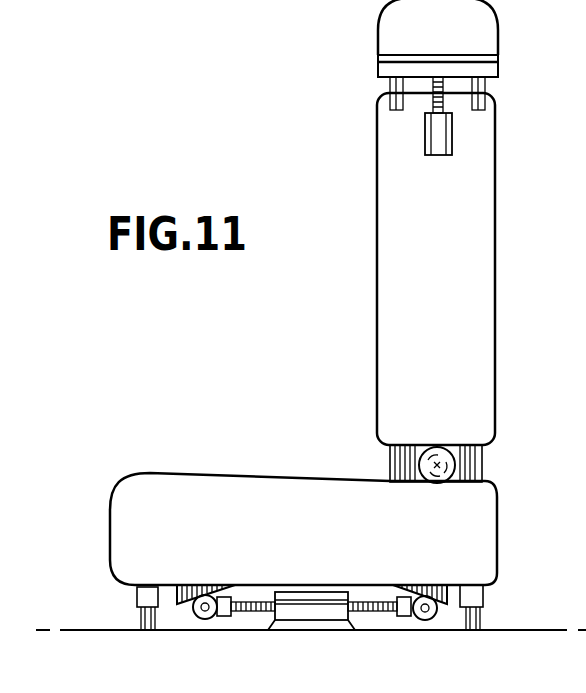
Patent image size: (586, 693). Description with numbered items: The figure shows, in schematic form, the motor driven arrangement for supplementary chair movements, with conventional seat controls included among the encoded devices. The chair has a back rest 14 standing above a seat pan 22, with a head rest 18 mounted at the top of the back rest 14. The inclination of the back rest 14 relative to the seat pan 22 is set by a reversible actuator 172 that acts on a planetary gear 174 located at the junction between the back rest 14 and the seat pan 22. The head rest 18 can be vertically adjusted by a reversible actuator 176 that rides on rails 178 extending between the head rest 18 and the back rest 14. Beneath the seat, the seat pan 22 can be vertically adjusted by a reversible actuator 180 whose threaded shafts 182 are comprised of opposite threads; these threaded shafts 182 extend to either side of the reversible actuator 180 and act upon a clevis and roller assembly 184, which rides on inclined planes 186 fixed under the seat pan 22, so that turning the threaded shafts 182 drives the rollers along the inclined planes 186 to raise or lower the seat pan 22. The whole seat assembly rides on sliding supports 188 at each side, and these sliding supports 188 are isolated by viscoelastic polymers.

The back rest 14 is at (399, 247).
The head rest 18 is at (470, 30).
The seat pan 22 is at (147, 500).
The reversible actuator 172 is at (456, 462).
The planetary gear 174 is at (418, 463).
The reversible actuator 176 is at (445, 147).
The rails 178 is at (487, 93).
The reversible actuator 180 is at (315, 613).
The threaded shafts 182 is at (256, 613).
The clevis and roller assembly 184 is at (205, 618).
The inclined planes 186 is at (192, 585).
The sliding supports 188 is at (105, 591).